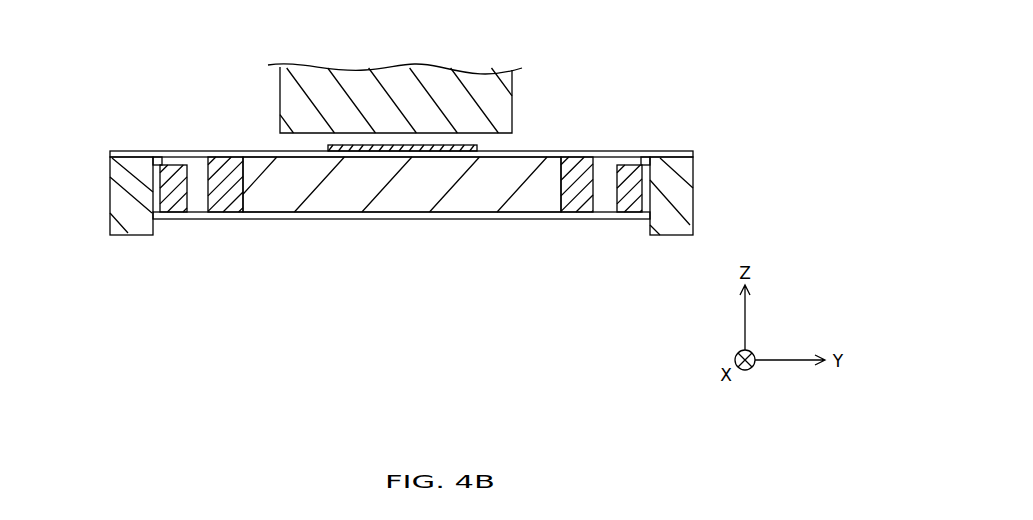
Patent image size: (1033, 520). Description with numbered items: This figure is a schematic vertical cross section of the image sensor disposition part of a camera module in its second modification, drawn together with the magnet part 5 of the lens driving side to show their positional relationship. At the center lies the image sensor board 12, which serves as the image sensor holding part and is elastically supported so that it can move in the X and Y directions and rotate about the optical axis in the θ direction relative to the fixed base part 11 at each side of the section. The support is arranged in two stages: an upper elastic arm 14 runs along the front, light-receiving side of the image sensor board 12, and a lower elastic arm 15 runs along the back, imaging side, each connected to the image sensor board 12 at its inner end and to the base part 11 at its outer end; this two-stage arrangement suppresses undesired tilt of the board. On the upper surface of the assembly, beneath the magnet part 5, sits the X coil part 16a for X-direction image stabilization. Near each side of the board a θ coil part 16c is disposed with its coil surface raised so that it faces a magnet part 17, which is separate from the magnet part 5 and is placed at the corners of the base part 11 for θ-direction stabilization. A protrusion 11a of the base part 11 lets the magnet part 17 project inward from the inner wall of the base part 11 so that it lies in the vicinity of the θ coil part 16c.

The magnet part 5 is at (404, 66).
The base part 11 is at (126, 194).
The protrusion 11a is at (154, 152).
The image sensor board 12 is at (540, 200).
The upper elastic arm 14 is at (276, 151).
The lower elastic arm 15 is at (258, 219).
The X coil part 16a is at (403, 152).
The θ coil part 16c is at (226, 158).
The magnet part 17 is at (172, 212).